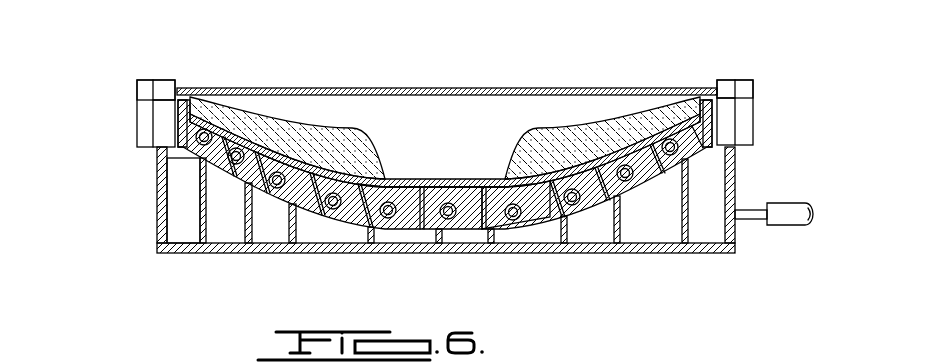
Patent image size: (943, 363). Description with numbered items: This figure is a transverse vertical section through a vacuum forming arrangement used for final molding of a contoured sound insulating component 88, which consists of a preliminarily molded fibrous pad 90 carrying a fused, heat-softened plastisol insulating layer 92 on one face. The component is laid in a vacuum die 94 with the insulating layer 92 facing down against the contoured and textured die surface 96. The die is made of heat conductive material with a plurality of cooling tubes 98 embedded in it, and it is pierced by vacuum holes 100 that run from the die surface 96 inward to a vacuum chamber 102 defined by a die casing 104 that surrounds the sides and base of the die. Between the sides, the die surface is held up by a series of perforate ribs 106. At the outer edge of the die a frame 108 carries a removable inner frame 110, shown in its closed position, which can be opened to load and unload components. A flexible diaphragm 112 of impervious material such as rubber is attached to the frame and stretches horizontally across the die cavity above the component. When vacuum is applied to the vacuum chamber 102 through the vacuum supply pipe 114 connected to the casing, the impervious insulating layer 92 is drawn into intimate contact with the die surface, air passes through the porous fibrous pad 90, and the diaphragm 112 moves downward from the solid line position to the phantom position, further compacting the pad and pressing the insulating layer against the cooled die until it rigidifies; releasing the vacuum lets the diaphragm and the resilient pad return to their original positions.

The contoured sound insulating component 88 is at (377, 126).
The fibrous pad 90 is at (323, 140).
The insulating layer 92 is at (386, 186).
The vacuum die 94 is at (420, 220).
The die surface 96 is at (517, 185).
The cooling tubes 98 is at (462, 213).
The vacuum holes 100 is at (313, 197).
The vacuum chamber 102 is at (230, 223).
The die casing 104 is at (712, 254).
The perforate ribs 106 is at (677, 200).
The frame 108 is at (137, 103).
The inner frame 110 is at (167, 81).
The flexible diaphragm 112 is at (491, 89).
The vacuum supply pipe 114 is at (756, 226).